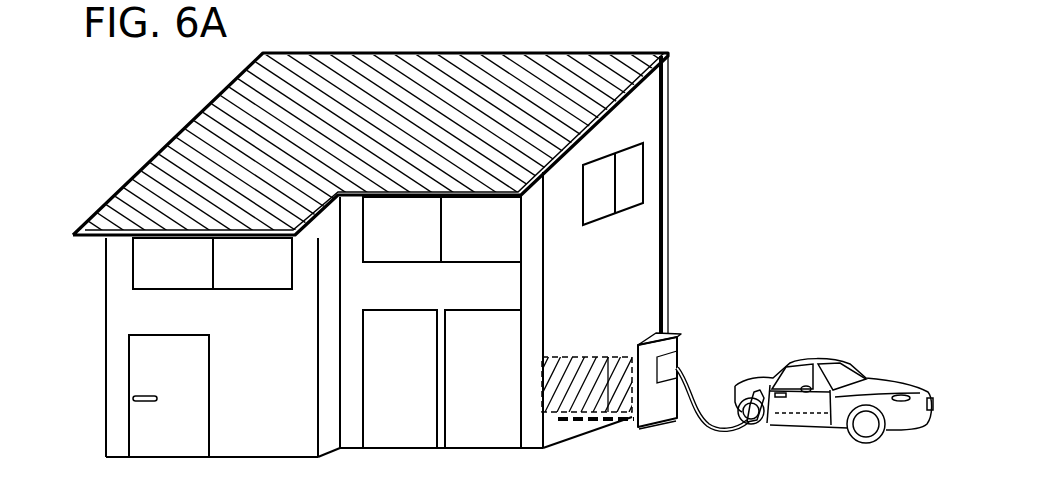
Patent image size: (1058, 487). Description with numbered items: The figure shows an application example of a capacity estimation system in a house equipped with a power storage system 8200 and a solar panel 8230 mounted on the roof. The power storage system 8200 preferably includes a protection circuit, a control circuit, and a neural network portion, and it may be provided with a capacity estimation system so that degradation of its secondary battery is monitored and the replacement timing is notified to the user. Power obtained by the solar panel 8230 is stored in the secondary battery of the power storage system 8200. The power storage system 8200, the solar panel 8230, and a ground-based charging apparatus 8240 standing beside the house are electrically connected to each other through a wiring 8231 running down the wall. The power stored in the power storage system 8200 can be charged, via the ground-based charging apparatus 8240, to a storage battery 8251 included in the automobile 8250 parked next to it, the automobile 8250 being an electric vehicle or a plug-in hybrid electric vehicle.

The power storage system 8200 is at (594, 373).
The solar panel 8230 is at (577, 72).
The wiring 8231 is at (664, 120).
The ground-based charging apparatus 8240 is at (680, 333).
The automobile 8250 is at (942, 352).
The storage battery 8251 is at (772, 423).